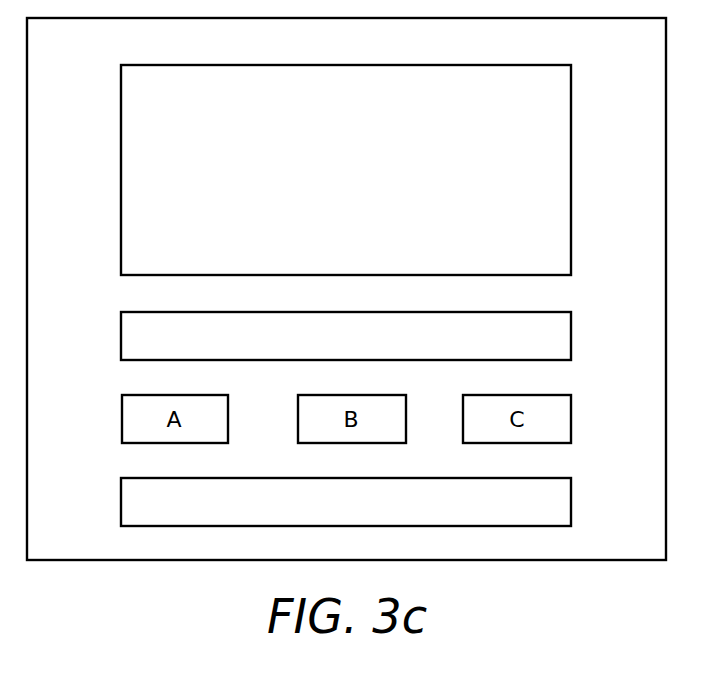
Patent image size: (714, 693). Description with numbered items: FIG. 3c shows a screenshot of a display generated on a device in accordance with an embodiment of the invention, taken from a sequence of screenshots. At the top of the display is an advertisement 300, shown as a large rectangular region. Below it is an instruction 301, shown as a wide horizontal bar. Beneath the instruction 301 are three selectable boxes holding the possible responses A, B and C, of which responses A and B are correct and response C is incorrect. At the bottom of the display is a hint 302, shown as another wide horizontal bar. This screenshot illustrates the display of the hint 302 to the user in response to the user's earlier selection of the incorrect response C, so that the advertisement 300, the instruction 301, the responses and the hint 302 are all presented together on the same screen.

The advertisement 300 is at (571, 77).
The instruction 301 is at (571, 333).
The hint 302 is at (571, 500).